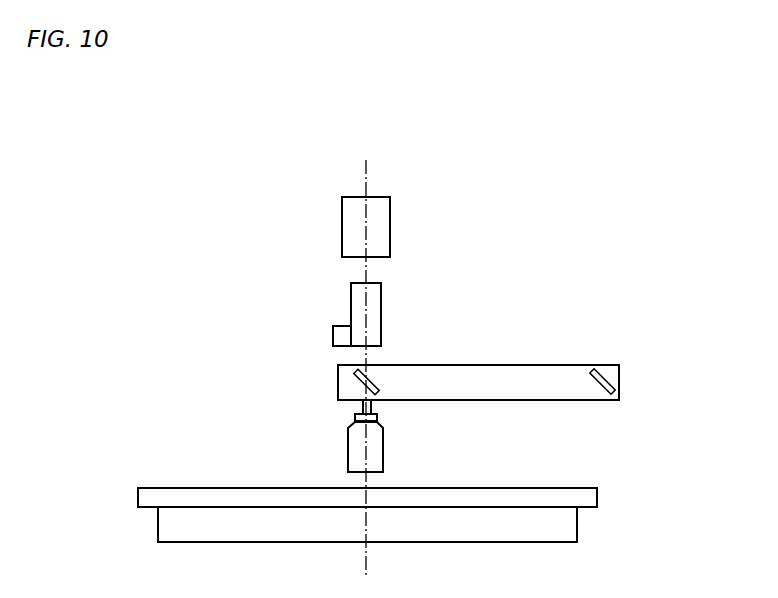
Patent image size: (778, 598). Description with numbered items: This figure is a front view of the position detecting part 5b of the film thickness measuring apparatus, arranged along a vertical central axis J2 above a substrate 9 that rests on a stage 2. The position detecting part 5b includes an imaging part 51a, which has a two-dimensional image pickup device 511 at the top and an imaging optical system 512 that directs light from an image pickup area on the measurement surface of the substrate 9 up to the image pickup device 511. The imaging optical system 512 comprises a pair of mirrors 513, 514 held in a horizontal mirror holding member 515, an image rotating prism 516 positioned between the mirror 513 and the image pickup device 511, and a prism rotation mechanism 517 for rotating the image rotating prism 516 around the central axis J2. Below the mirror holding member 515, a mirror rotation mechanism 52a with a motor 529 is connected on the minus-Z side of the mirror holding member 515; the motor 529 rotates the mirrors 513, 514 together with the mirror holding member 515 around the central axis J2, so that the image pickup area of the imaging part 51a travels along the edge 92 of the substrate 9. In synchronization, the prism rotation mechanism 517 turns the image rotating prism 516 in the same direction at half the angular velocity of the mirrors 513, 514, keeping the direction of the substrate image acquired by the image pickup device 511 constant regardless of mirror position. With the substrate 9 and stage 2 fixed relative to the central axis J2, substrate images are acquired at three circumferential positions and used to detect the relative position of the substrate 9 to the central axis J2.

The stage 2 is at (545, 522).
The substrate 9 is at (297, 498).
The edge of the substrate 92 is at (597, 487).
The position detecting part 5b is at (480, 177).
The central axis J2 is at (357, 178).
The imaging part 51a is at (533, 261).
The image pickup device 511 is at (376, 228).
The imaging optical system 512 is at (558, 311).
The mirror 513 is at (374, 372).
The mirror 514 is at (605, 380).
The mirror holding member 515 is at (510, 383).
The image rotating prism 516 is at (357, 308).
The prism rotation mechanism 517 is at (338, 343).
The mirror rotation mechanism 52a is at (496, 435).
The motor 529 is at (377, 450).